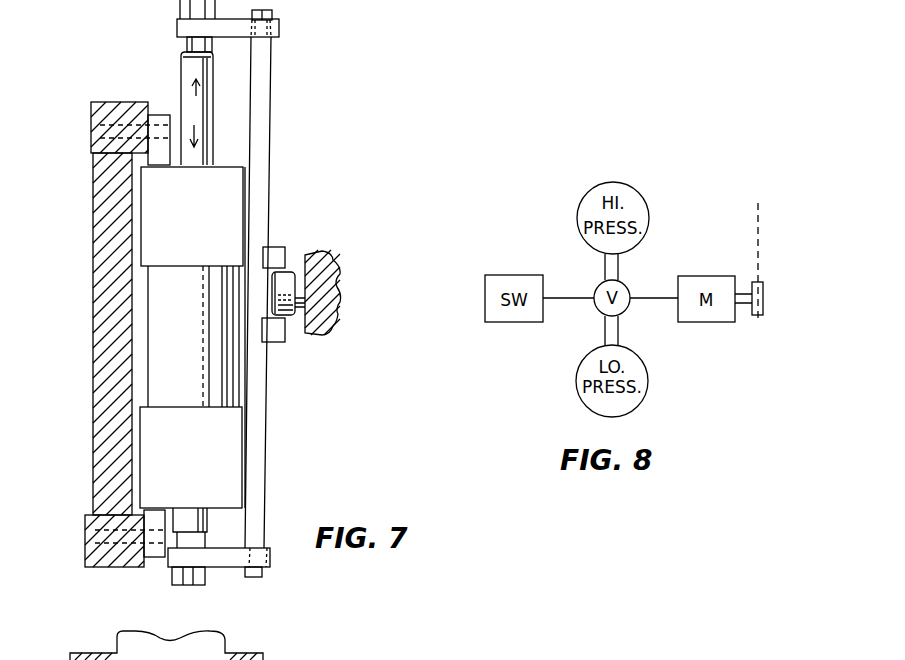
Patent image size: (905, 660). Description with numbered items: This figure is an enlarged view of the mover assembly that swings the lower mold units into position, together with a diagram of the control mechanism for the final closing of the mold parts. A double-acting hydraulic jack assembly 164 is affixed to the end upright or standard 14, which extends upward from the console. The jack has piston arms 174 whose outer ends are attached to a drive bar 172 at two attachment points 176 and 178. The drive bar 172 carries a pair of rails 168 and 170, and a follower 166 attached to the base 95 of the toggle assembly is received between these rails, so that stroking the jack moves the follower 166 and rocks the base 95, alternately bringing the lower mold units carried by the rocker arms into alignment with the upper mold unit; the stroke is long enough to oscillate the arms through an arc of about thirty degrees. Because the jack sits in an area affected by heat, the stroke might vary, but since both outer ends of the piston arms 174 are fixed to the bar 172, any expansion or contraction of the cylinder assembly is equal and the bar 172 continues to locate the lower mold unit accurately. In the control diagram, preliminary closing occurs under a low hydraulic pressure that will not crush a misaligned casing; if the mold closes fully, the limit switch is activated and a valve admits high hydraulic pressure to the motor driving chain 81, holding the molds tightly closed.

In FIG. 7, the end upright 14 is at (92, 225).
In FIG. 7, the attachment point of drive bar to piston arm 176 is at (188, 29).
In FIG. 7, the piston arms 174 is at (188, 72).
In FIG. 7, the drive bar 172 is at (258, 445).
In FIG. 7, the double-acting hydraulic jack assembly 164 is at (282, 162).
In FIG. 7, the rail 168 is at (273, 250).
In FIG. 7, the rail 170 is at (282, 337).
In FIG. 7, the follower 166 is at (289, 283).
In FIG. 7, the base 95 is at (323, 317).
In FIG. 7, the attachment point of drive bar to piston arm 178 is at (223, 560).
In FIG. 8, the motor driving chain 81 is at (763, 238).